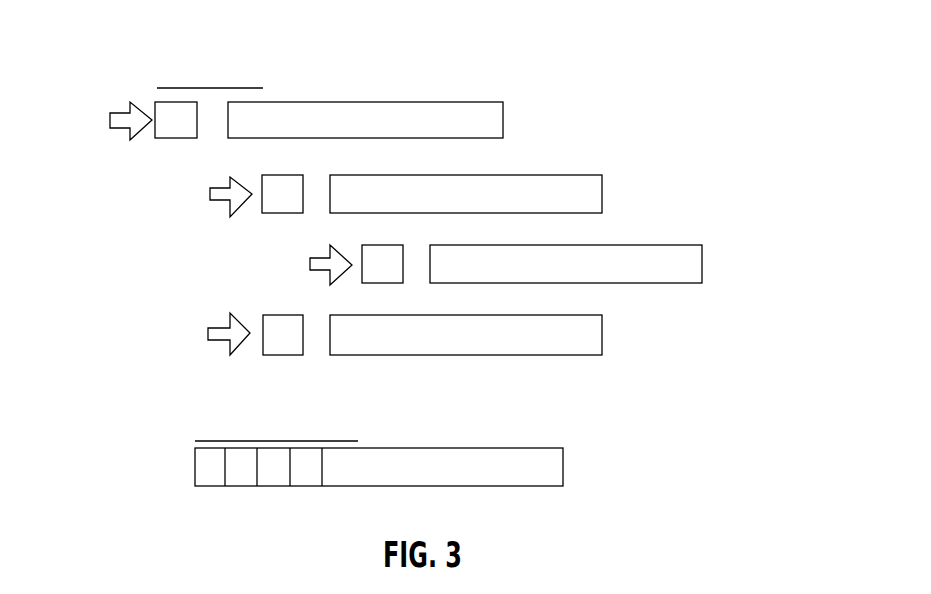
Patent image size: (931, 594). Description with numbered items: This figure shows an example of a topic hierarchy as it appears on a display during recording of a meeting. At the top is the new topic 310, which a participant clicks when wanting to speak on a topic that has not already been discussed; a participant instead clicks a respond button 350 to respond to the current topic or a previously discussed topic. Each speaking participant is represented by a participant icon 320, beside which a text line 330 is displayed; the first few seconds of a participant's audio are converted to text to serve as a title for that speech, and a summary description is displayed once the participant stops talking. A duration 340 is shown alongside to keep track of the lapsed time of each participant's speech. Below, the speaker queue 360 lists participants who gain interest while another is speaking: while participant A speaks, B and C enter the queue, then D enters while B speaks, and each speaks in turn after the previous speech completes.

The new topic 310 is at (267, 78).
The participant icon 320 is at (182, 138).
The text line 330 is at (405, 102).
The duration 340 is at (708, 193).
The respond button 350 is at (218, 340).
The speaker queue 360 is at (362, 432).